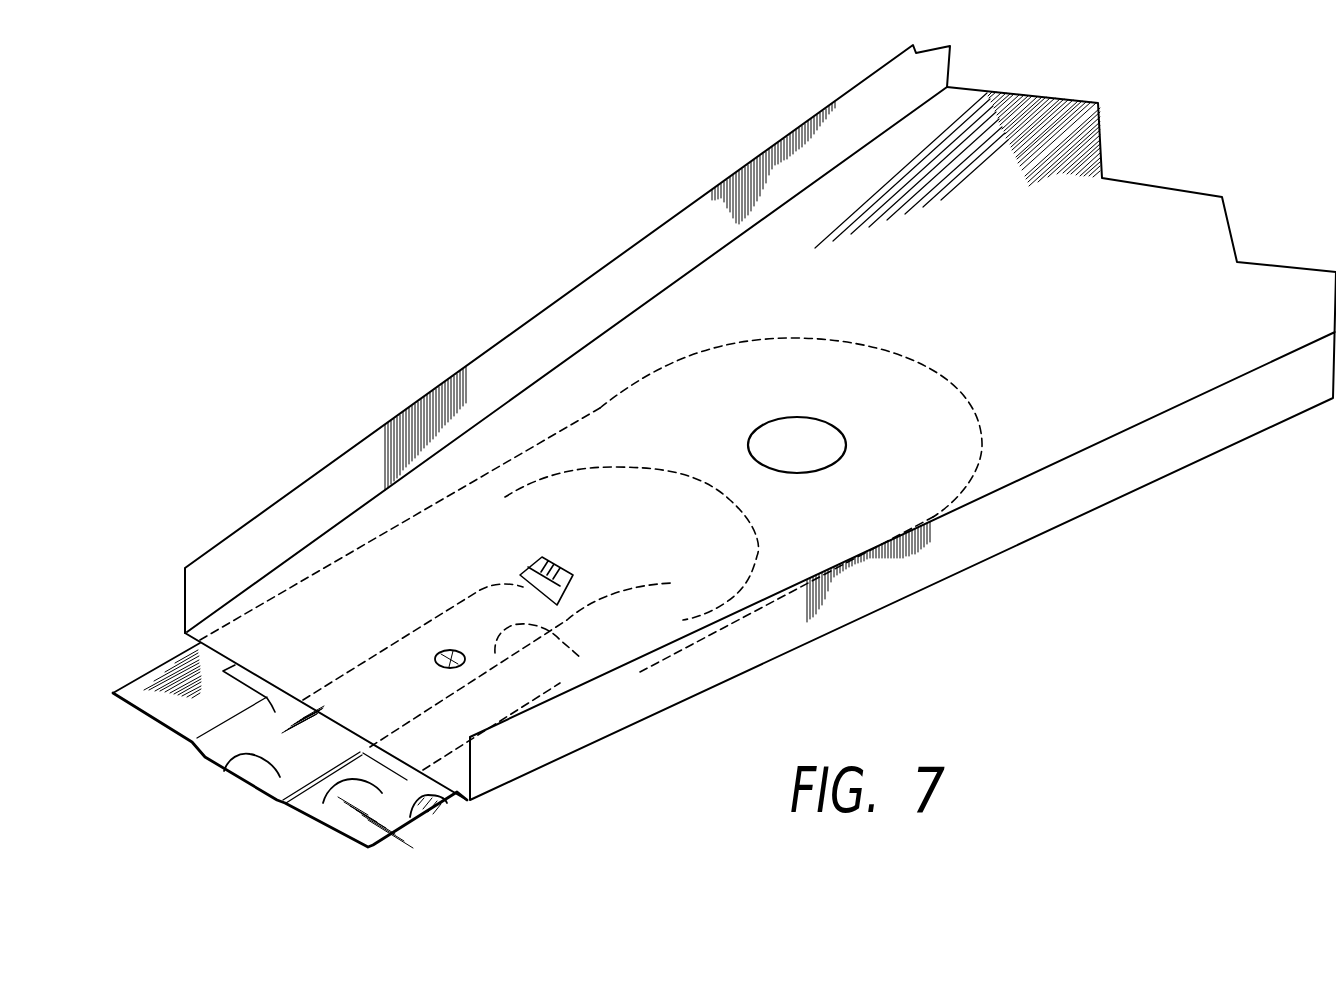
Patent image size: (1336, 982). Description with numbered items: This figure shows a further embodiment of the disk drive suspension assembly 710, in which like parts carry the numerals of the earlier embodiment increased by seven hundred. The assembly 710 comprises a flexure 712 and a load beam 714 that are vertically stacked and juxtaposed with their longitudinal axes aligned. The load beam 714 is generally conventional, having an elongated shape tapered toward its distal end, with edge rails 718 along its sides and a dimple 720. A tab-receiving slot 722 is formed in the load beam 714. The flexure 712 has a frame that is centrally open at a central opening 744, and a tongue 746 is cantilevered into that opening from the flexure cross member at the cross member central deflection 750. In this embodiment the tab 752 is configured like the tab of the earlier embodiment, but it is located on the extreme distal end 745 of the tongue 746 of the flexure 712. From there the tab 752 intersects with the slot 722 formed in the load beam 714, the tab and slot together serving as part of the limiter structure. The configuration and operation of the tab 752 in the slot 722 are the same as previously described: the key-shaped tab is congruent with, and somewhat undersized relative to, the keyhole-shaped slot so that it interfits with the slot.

The disk drive suspension assembly 710 is at (484, 294).
The flexure 712 is at (445, 803).
The load beam 714 is at (1194, 192).
The edge rails 718 is at (873, 118).
The dimple 720 is at (447, 657).
The slot 722 is at (527, 570).
The central opening 744 is at (687, 512).
The distal end of tongue 745 is at (542, 658).
The tongue 746 is at (560, 627).
The cross member central deflection 750 is at (224, 762).
The tab 752 is at (557, 567).